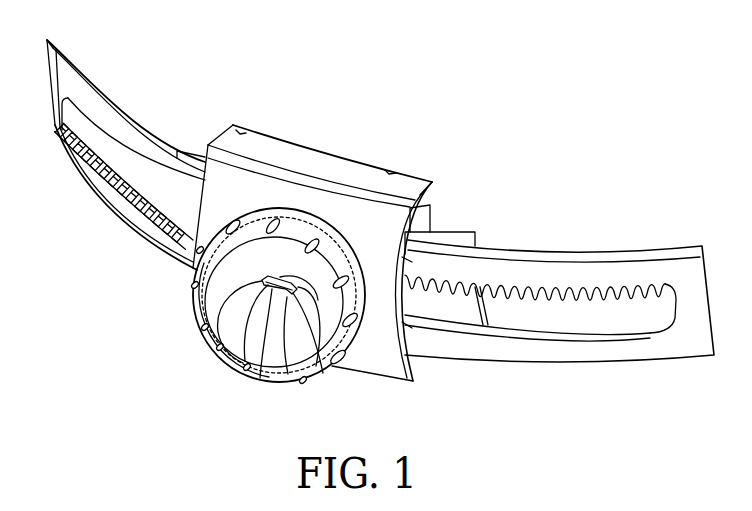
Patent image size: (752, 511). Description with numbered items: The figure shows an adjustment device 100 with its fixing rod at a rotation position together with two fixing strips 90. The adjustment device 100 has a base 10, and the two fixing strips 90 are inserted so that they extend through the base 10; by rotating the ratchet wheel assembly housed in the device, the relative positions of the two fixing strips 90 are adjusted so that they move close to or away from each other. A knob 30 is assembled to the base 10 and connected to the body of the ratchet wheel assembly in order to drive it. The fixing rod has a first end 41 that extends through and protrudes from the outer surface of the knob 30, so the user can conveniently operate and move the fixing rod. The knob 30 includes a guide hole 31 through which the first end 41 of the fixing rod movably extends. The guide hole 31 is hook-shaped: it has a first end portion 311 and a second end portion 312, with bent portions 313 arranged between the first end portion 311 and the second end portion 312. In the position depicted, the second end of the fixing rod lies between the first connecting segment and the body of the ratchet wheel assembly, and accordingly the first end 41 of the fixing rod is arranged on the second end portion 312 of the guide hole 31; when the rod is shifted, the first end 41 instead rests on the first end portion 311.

The adjustment device 100 is at (217, 104).
The fixing strip 90 is at (114, 126).
The base 10 is at (337, 172).
The knob 30 is at (210, 278).
The guide hole 31 is at (238, 354).
The first end portion 311 is at (215, 338).
The second end portion 312 is at (263, 368).
The bent portion 313 is at (314, 366).
The first end 41 is at (284, 386).